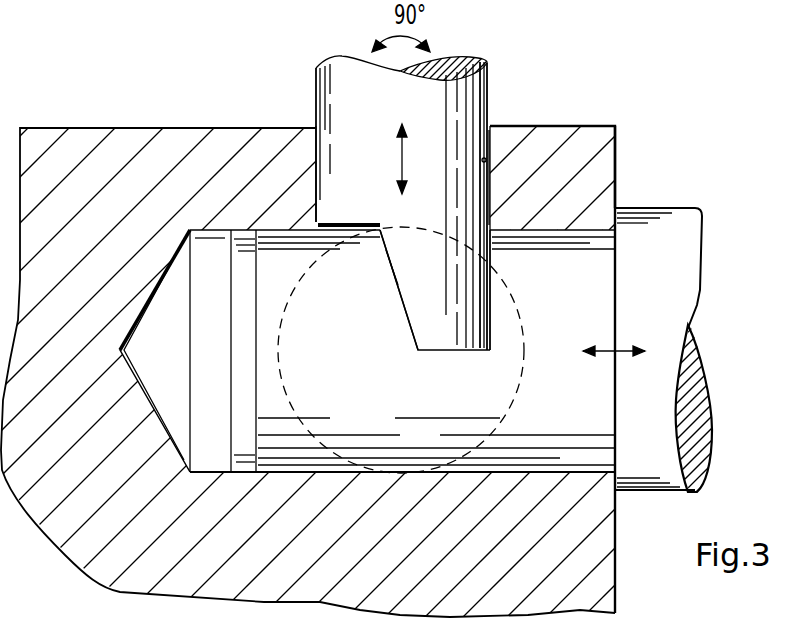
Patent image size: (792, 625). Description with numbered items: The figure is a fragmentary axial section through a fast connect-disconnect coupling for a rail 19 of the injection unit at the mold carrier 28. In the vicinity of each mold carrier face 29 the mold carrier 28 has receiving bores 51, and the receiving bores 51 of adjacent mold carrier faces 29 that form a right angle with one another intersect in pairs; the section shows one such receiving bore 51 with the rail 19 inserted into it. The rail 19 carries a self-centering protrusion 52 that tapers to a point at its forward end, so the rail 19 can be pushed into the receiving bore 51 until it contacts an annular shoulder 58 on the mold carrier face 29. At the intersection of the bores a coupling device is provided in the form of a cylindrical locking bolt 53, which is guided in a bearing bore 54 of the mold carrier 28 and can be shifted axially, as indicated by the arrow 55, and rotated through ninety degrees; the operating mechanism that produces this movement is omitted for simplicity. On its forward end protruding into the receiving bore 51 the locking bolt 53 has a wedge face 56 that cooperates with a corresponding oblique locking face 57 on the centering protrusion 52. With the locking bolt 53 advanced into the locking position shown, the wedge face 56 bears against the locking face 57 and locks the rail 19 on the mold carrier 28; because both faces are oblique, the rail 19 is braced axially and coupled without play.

The rail 19 is at (658, 223).
The mold carrier 28 is at (564, 136).
The mold carrier face 29 is at (618, 160).
The receiving bore 51 is at (207, 393).
The self-centering protrusion 52 is at (272, 240).
The locking bolt 53 is at (472, 95).
The bearing bore 54 is at (485, 160).
The arrow 55 is at (400, 150).
The wedge face 56 is at (398, 290).
The locking face 57 is at (395, 278).
The annular shoulder 58 is at (612, 492).